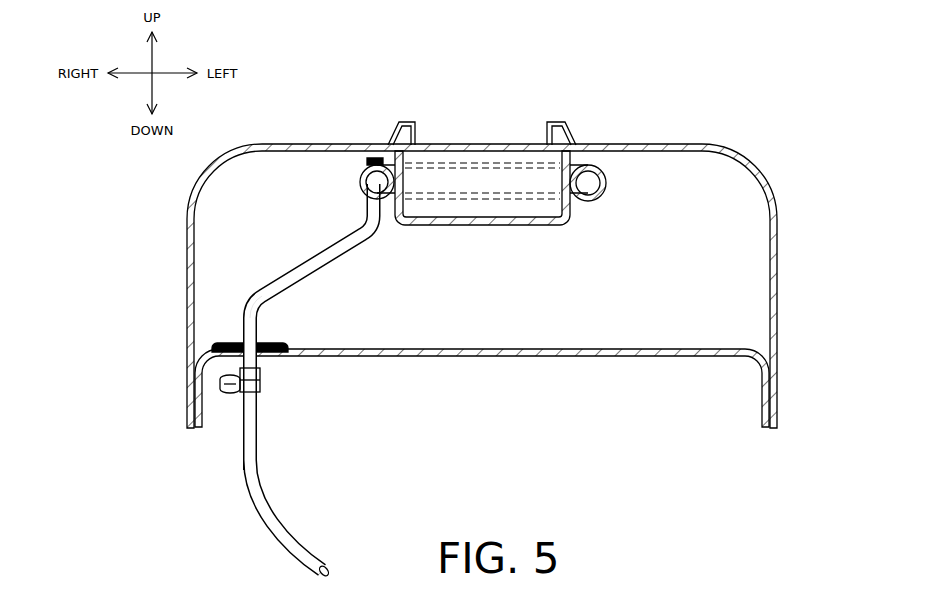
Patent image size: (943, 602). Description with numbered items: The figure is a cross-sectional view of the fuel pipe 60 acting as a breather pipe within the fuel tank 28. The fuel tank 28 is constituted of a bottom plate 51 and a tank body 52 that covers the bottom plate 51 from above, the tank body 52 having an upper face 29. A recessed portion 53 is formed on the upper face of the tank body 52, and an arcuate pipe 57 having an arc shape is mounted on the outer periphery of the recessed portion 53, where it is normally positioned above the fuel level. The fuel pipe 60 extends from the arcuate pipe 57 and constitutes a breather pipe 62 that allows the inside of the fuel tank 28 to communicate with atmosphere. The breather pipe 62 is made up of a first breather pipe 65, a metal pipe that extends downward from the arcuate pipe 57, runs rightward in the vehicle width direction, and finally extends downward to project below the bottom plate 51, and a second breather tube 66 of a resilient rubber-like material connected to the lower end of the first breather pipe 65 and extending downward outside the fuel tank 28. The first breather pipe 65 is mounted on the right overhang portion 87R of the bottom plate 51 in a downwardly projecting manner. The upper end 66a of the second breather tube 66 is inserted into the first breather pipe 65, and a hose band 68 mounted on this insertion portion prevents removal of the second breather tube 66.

The fuel tank 28 is at (769, 185).
The upper face 29 is at (630, 150).
The bottom plate 51 is at (518, 357).
The tank body 52 is at (778, 262).
The recessed portion 53 is at (465, 222).
The arcuate pipe 57 is at (591, 164).
The fuel pipe 60 is at (321, 247).
The breather pipe 62 is at (223, 309).
The first breather pipe 65 is at (242, 304).
The second breather tube 66 is at (244, 459).
The upper end of the second breather tube 66a is at (261, 378).
The hose band 68 is at (262, 392).
The right overhang portion 87R is at (267, 358).